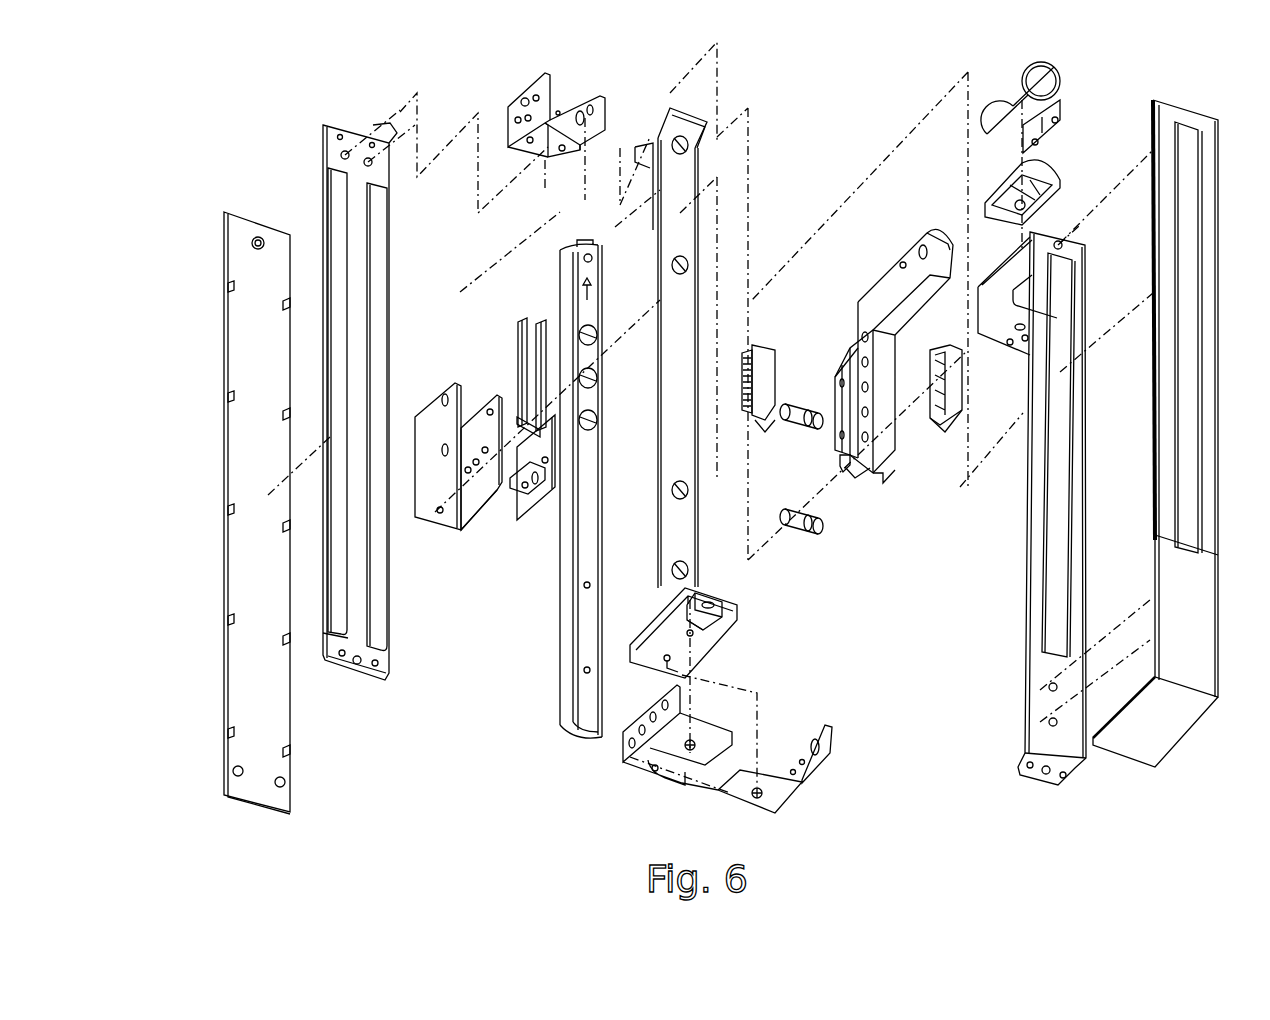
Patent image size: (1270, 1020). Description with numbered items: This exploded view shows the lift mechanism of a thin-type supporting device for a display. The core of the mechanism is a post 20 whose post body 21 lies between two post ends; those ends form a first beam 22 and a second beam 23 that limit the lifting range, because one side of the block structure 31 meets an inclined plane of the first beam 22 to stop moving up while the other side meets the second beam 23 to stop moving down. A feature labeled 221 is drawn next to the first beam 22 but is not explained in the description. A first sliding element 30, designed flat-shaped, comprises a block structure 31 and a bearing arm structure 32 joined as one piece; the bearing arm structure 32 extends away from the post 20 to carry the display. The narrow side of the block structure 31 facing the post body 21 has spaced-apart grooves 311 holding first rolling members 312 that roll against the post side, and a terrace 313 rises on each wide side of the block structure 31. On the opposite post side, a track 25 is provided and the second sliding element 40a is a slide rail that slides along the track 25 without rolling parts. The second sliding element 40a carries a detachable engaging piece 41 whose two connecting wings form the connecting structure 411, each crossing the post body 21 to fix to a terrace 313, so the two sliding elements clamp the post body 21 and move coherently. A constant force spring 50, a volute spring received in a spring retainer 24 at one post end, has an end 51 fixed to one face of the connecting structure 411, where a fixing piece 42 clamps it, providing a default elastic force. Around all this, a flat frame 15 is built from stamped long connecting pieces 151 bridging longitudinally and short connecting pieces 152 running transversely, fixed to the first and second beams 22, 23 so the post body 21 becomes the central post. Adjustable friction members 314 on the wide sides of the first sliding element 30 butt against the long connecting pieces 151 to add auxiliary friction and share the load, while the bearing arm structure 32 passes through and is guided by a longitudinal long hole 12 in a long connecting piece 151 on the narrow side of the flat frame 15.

The longitudinal long hole 12 is at (1163, 457).
The flat frame 15 is at (263, 226).
The long connecting piece 151 is at (328, 205).
The short connecting piece 152 is at (553, 108).
The post 20 is at (707, 232).
The post body 21 is at (682, 187).
The first beam 22 is at (685, 118).
The screw 221 is at (683, 137).
The second beam 23 is at (710, 640).
The spring retainer 24 is at (1057, 188).
The track 25 is at (565, 682).
The first sliding element 30 is at (928, 537).
The block structure 31 is at (883, 417).
The groove 311 is at (845, 467).
The first rolling member 312 is at (818, 510).
The terrace 313 is at (852, 467).
The adjustable friction member 314 is at (767, 347).
The bearing arm structure 32 is at (887, 292).
The second sliding element 40a is at (515, 328).
The engaging piece 41 is at (447, 520).
The connecting structure 411 is at (430, 413).
The fixing piece 42 is at (538, 508).
The constant force spring 50 is at (1065, 82).
The end of the constant force spring 51 is at (1060, 128).